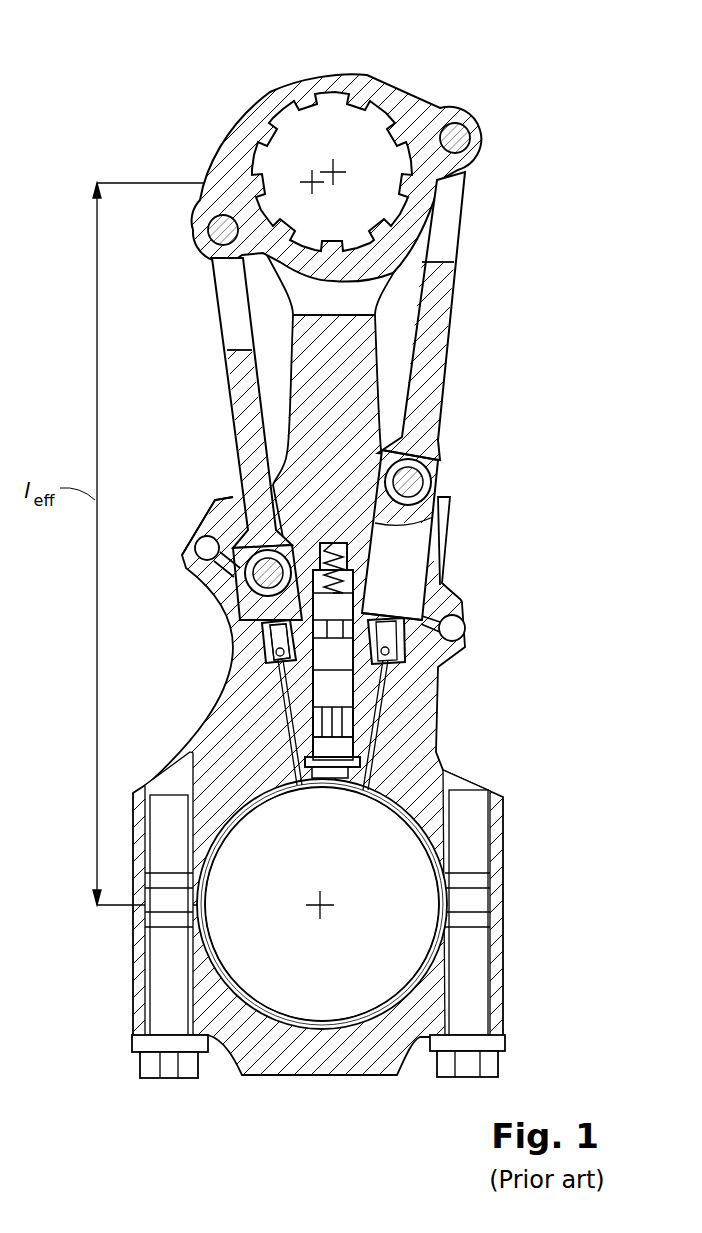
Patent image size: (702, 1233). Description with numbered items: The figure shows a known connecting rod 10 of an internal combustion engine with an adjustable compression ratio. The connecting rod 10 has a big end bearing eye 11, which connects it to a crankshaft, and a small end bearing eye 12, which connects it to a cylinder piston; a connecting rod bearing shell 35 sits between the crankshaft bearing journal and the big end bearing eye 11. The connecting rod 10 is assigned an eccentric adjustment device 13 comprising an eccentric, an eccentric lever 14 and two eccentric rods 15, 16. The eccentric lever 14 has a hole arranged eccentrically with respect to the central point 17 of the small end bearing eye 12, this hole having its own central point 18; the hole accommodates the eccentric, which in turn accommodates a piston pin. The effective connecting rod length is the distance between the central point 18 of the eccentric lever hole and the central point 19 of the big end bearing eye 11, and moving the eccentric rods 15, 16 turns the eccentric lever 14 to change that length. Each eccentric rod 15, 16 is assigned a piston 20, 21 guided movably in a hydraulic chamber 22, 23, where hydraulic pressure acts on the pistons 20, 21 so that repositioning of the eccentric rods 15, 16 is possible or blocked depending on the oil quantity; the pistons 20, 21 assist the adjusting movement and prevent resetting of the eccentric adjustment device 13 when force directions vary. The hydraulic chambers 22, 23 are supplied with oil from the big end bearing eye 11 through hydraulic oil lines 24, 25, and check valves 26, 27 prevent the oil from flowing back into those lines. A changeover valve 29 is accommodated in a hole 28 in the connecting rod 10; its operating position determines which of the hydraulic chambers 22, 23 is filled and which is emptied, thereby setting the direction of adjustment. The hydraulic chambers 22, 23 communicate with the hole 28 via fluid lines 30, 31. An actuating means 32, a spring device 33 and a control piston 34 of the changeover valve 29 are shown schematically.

The connecting rod 10 is at (422, 730).
The big end bearing eye 11 is at (330, 900).
The small end bearing eye 12 is at (366, 128).
The eccentric adjustment device 13 is at (270, 80).
The eccentric lever 14 is at (427, 120).
The eccentric rod 15 is at (240, 402).
The eccentric rod 16 is at (437, 330).
The central point of the small end bearing eye 17 is at (333, 165).
The central point of the hole in the eccentric lever 18 is at (312, 182).
The central point of the big end bearing eye 19 is at (380, 947).
The piston 20 is at (425, 518).
The piston 21 is at (240, 598).
The hydraulic chamber 22 is at (452, 612).
The hydraulic chamber 23 is at (233, 507).
The hydraulic oil line 24 is at (388, 682).
The hydraulic oil line 25 is at (282, 700).
The check valve 26 is at (410, 640).
The check valve 27 is at (272, 665).
The hole 28 is at (335, 605).
The changeover valve 29 is at (352, 790).
The fluid line 30 is at (412, 606).
The fluid line 31 is at (262, 640).
The actuating means 32 is at (320, 747).
The spring device 33 is at (347, 590).
The control piston 34 is at (228, 578).
The connecting rod bearing shell 35 is at (330, 1023).